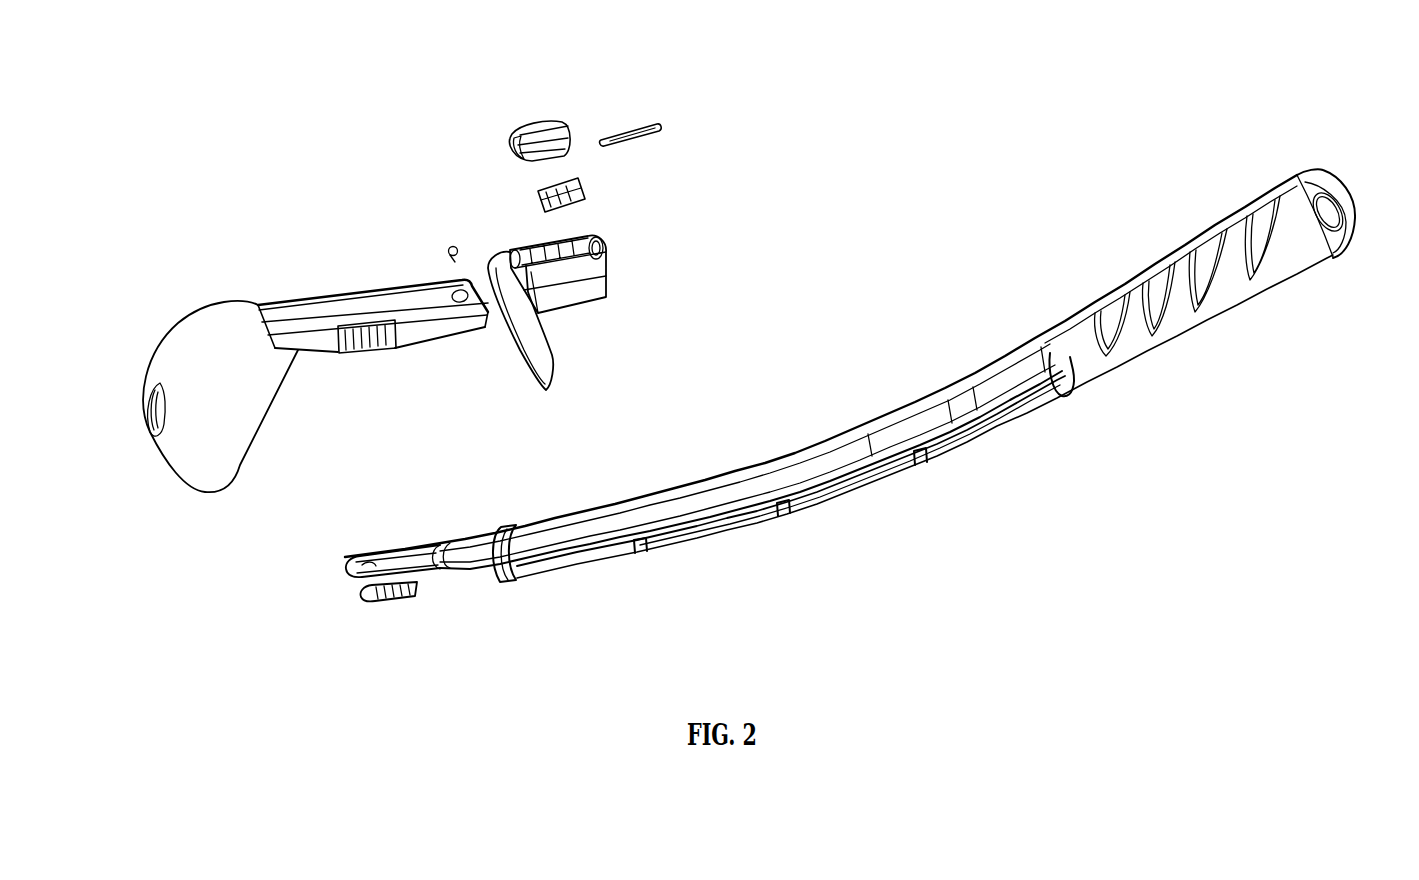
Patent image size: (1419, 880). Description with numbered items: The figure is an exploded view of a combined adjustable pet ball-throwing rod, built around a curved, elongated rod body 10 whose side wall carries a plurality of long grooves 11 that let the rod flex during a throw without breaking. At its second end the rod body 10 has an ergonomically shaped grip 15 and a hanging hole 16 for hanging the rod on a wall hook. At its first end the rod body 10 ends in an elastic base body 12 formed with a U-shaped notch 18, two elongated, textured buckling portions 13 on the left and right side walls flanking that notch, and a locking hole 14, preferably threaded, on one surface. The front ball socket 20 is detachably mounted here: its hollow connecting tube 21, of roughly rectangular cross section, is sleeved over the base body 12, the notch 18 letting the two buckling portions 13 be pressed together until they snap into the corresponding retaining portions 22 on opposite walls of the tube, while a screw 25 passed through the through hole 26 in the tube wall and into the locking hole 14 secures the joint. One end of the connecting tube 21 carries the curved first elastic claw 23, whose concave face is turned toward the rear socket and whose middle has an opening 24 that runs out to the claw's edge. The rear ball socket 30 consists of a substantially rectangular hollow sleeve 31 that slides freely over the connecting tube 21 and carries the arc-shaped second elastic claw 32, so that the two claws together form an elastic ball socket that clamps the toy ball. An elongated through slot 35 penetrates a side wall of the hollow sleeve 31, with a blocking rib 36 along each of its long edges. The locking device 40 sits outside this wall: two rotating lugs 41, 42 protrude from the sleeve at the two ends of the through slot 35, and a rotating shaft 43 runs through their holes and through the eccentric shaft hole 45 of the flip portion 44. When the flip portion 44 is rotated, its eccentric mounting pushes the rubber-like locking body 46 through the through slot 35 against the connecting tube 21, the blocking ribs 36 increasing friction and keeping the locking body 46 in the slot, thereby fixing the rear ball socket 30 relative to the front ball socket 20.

The rod body 10 is at (857, 404).
The long grooves 11 is at (822, 497).
The base body 12 is at (480, 548).
The buckling portions 13 is at (384, 597).
The locking hole 14 is at (494, 534).
The grip 15 is at (1170, 263).
The hanging hole 16 is at (1348, 243).
The U-shaped notch 18 is at (380, 548).
The front ball socket 20 is at (305, 348).
The connecting tube 21 is at (452, 338).
The retaining portion 22 is at (366, 353).
The first elastic claw 23 is at (198, 340).
The opening 24 is at (160, 437).
The screw 25 is at (452, 248).
The through hole 26 is at (455, 291).
The rear ball socket 30 is at (568, 290).
The hollow sleeve 31 is at (606, 280).
The second elastic claw 32 is at (548, 352).
The through slot 35 is at (588, 236).
The blocking rib 36 is at (563, 243).
The rotating lug 41 is at (606, 258).
The rotating lug 42 is at (516, 250).
The locking device 40 is at (606, 118).
The rotating shaft 43 is at (656, 135).
The flip portion 44 is at (546, 134).
The shaft hole 45 is at (521, 156).
The locking body 46 is at (586, 181).